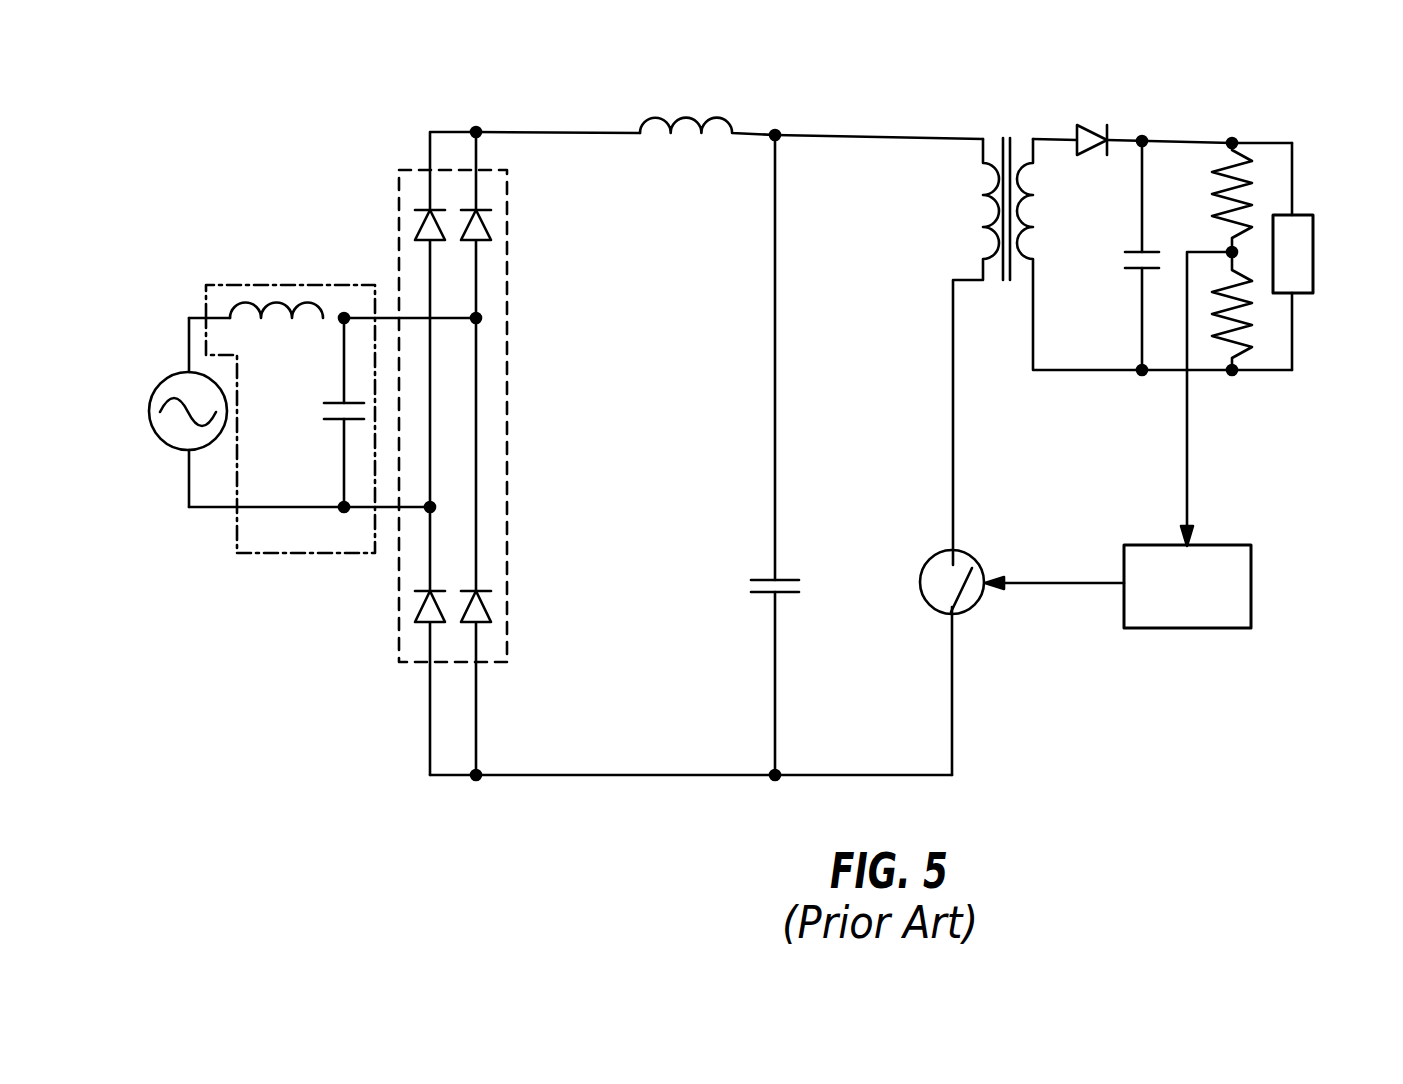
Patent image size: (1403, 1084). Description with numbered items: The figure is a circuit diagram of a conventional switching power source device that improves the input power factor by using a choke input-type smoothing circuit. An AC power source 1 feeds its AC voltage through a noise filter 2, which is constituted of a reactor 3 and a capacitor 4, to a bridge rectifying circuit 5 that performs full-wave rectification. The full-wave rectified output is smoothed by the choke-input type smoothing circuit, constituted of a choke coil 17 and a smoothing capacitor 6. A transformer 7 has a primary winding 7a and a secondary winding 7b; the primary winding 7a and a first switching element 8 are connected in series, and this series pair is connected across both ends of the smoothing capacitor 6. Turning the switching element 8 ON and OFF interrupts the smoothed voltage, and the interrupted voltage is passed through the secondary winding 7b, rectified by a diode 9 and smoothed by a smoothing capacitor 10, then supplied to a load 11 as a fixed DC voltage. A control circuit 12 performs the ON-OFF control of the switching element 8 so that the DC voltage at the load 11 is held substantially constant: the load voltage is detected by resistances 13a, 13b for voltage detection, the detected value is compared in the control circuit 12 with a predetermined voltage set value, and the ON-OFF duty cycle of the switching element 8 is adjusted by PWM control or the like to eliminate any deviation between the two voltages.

The AC power source 1 is at (170, 438).
The noise filter 2 is at (312, 555).
The reactor 3 is at (275, 308).
The capacitor 4 is at (322, 412).
The bridge rectifying circuit 5 is at (422, 168).
The smoothing capacitor 6 is at (760, 578).
The choke coil 17 is at (688, 118).
The transformer 7 is at (1008, 131).
The primary winding 7a is at (987, 207).
The secondary winding 7b is at (1030, 213).
The first switching element 8 is at (980, 605).
The diode 9 is at (1085, 124).
The smoothing capacitor 10 is at (1130, 269).
The load 11 is at (1315, 222).
The control circuit 12 is at (1139, 544).
The resistance for voltage detection 13a is at (1214, 191).
The resistance for voltage detection 13b is at (1255, 340).